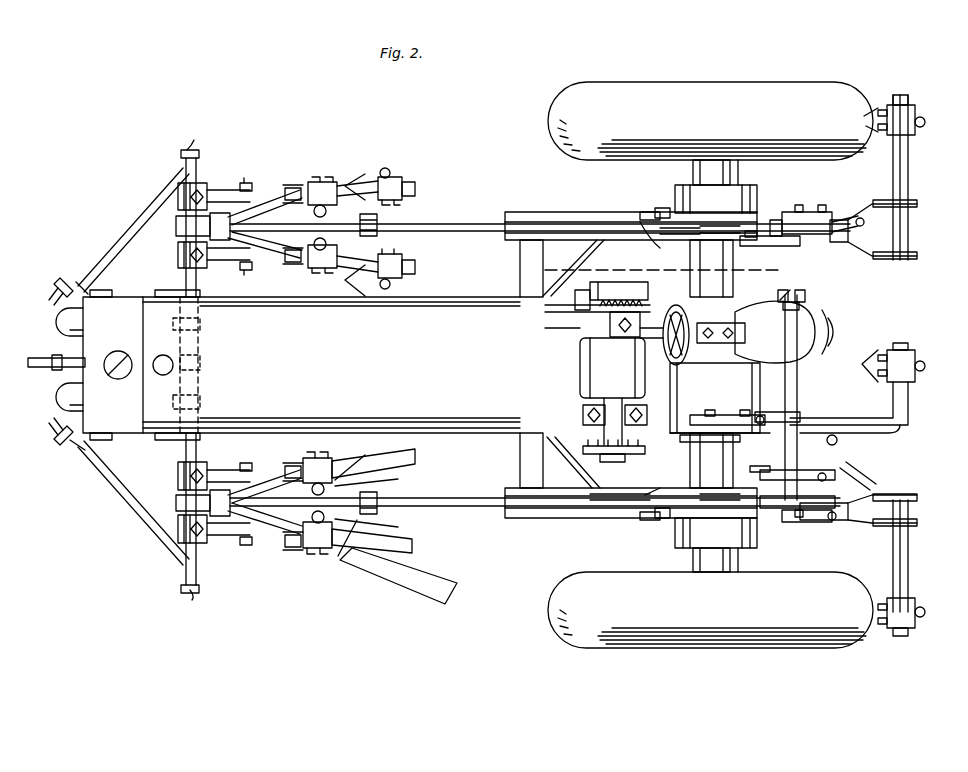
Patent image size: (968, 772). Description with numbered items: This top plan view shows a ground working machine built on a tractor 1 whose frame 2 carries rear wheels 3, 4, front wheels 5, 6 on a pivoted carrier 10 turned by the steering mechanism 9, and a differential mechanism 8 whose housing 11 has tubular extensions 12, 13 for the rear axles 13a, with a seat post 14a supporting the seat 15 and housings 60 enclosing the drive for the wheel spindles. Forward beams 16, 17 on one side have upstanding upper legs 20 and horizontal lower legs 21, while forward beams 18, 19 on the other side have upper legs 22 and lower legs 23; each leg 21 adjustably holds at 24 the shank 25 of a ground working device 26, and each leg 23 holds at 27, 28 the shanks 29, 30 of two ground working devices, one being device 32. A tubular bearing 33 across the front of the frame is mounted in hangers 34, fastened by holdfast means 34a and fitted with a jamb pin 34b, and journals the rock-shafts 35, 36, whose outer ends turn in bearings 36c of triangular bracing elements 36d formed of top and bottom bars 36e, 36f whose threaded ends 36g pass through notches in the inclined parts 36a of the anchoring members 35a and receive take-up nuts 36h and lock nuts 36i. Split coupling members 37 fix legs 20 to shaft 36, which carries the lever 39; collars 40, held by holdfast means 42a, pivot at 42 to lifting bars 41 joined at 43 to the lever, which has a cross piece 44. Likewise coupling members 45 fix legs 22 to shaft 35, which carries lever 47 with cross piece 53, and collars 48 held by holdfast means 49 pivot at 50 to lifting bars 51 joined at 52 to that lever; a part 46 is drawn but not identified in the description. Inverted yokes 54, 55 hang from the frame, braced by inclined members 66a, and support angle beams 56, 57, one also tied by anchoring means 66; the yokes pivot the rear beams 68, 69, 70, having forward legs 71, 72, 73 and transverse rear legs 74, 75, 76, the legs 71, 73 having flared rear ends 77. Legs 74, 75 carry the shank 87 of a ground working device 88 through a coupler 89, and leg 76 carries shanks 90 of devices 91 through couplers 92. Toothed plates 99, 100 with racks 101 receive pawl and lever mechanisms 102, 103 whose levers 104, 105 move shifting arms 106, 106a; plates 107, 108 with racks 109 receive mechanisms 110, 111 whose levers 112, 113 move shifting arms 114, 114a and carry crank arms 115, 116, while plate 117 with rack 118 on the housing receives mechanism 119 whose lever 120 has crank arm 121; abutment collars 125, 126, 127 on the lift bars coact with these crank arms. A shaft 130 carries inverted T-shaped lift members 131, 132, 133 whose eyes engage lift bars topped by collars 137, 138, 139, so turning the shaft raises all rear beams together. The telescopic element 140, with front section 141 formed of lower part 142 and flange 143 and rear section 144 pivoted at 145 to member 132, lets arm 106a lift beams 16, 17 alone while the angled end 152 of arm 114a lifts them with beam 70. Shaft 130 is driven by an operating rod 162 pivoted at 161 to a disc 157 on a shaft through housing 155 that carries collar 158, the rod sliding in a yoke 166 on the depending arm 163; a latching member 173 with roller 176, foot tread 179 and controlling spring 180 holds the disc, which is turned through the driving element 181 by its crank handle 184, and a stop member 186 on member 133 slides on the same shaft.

The tractor 1 is at (200, 390).
The frame 2 is at (545, 407).
The rear wheel 3 is at (778, 90).
The rear wheel 4 is at (612, 640).
The front wheel 5 is at (55, 326).
The front wheel 6 is at (58, 403).
The differential mechanism 8 is at (750, 340).
The steering mechanism 9 is at (692, 318).
The pivoted carrier 10 is at (113, 365).
The housing 11 is at (780, 375).
The tubular extension 12 is at (711, 268).
The tubular extension 13 is at (711, 460).
The rear axle 13a is at (712, 170).
The seat post 14a is at (720, 341).
The seat 15 is at (582, 288).
The forward beam 16 is at (270, 465).
The forward beam 17 is at (258, 538).
The forward beam 18 is at (252, 194).
The forward beam 19 is at (268, 262).
The upper leg 20 is at (256, 468).
The lower leg 21 is at (415, 460).
The upper leg 22 is at (250, 184).
The lower leg 23 is at (415, 188).
The securing point 24 is at (330, 468).
The shank 25 is at (388, 452).
The ground working device 26 is at (398, 480).
The securing point 27 is at (320, 182).
The securing point 28 is at (398, 180).
The shank 29 is at (327, 210).
The shank 30 is at (390, 170).
The ground working device 32 is at (348, 184).
The tubular bearing 33 is at (200, 345).
The hanger 34 is at (162, 290).
The holdfast means 34a is at (200, 326).
The jamb bolt 34b is at (202, 365).
The rock-shaft 35 is at (190, 150).
The anchoring member 35a is at (98, 292).
The rock-shaft 36 is at (200, 580).
The outwardly inclined part 36a is at (70, 280).
The bearing 36c is at (198, 148).
The bracing and supporting element 36d is at (130, 211).
The top bar 36e is at (120, 240).
The bottom bar 36f is at (145, 245).
The threaded end portion 36g is at (55, 287).
The take-up nut 36h is at (50, 302).
The lock nut 36i is at (100, 452).
The split coupling member 37 is at (245, 198).
The lever 39 is at (176, 496).
The sectional collar 40 is at (312, 489).
The lifting bar 41 is at (210, 498).
The pivot connection 42 is at (300, 468).
The holdfast means 42a is at (292, 470).
The pivot connection 43 is at (222, 488).
The cross piece 44 is at (210, 512).
The split coupling member 45 is at (200, 186).
The column 46 is at (186, 170).
The lever 47 is at (176, 222).
The sectional collar 48 is at (293, 188).
The holdfast means 49 is at (303, 190).
The pivot connection 50 is at (325, 182).
The lifting bar 51 is at (240, 262).
The pivot connection 52 is at (228, 215).
The cross piece 53 is at (210, 232).
The inverted yoke 54 is at (520, 270).
The inverted yoke 55 is at (520, 466).
The angle beam 56 is at (545, 216).
The angle beam 57 is at (540, 518).
The housing 60 is at (732, 200).
The anchoring means 66 is at (573, 462).
The inclined brace member 66a is at (572, 268).
The rear beam 68 is at (862, 218).
The center rear beam 69 is at (858, 422).
The rear beam 70 is at (848, 497).
The forward leg 71 is at (842, 244).
The forward leg 72 is at (836, 418).
The forward leg 73 is at (834, 496).
The rear leg 74 is at (908, 180).
The rear leg 75 is at (908, 399).
The rear leg 76 is at (908, 549).
The open flared rear end 77 is at (917, 256).
The shank 87 is at (920, 120).
The ground working device 88 is at (878, 110).
The coupler 89 is at (923, 128).
The shank 90 is at (917, 497).
The ground working device 91 is at (860, 520).
The coupler 92 is at (940, 470).
The semi-circular plate 99 is at (655, 212).
The semi-circular plate 100 is at (640, 518).
The rack 101 is at (665, 226).
The pawl and lever mechanism 102 is at (640, 216).
The pawl and lever mechanism 103 is at (656, 518).
The lever 104 is at (663, 241).
The lever 105 is at (640, 512).
The shifting arm 106 is at (716, 200).
The shifting arm 106a is at (716, 533).
The semi-circular plate 107 is at (790, 212).
The semi-circular plate 108 is at (805, 522).
The rack 109 is at (800, 205).
The pawl and lever mechanism 110 is at (748, 246).
The pawl and lever mechanism 111 is at (756, 466).
The lever 112 is at (760, 246).
The lever 113 is at (764, 459).
The shifting arm 114 is at (748, 236).
The shifting arm 114a is at (700, 494).
The crank arm 115 is at (790, 240).
The crank arm 116 is at (835, 480).
The semi-circular plate 117 is at (712, 410).
The rack 118 is at (720, 424).
The pawl and lever mechanism 119 is at (750, 418).
The lever 120 is at (770, 404).
The crank arm 121 is at (770, 412).
The abutment collar 125 is at (830, 205).
The abutment collar 126 is at (790, 470).
The abutment collar 127 is at (826, 418).
The shaft 130 is at (800, 306).
The lift member 131 is at (848, 216).
The lift member 132 is at (835, 522).
The lift member 133 is at (838, 442).
The collar 137 is at (878, 206).
The collar 138 is at (885, 495).
The collar 139 is at (900, 433).
The telescopic element 140 is at (475, 506).
The front section 141 is at (488, 518).
The lower part 142 is at (470, 452).
The vertical flange 143 is at (515, 435).
The rear section 144 is at (869, 470).
The pivot connection 145 is at (822, 572).
The angularly disposed forward end 152 is at (565, 518).
The housing 155 is at (613, 391).
The disc 157 is at (548, 314).
The collar 158 is at (583, 450).
The pivot 161 is at (619, 280).
The operating rod 162 is at (660, 276).
The depending arm 163 is at (838, 290).
The yoke 166 is at (816, 292).
The latching member 173 is at (530, 296).
The roller 176 is at (575, 300).
The foot tread 179 is at (545, 330).
The controlling spring 180 is at (625, 338).
The driving element 181 is at (108, 372).
The crank handle 184 is at (50, 369).
The stop member 186 is at (672, 420).